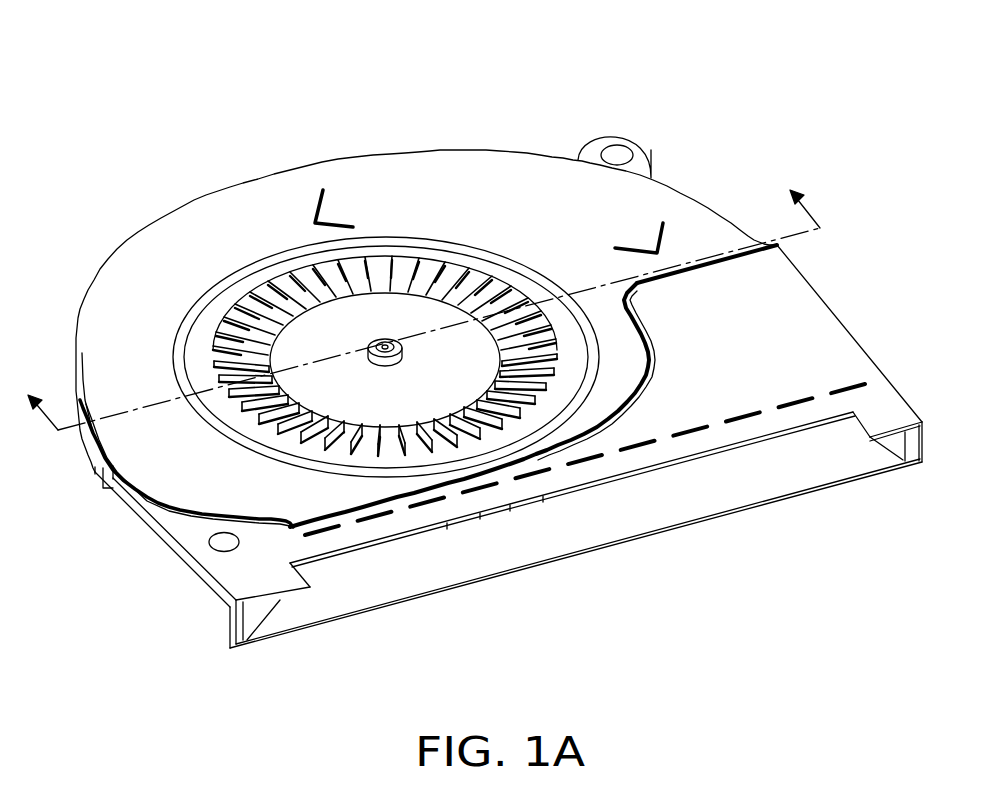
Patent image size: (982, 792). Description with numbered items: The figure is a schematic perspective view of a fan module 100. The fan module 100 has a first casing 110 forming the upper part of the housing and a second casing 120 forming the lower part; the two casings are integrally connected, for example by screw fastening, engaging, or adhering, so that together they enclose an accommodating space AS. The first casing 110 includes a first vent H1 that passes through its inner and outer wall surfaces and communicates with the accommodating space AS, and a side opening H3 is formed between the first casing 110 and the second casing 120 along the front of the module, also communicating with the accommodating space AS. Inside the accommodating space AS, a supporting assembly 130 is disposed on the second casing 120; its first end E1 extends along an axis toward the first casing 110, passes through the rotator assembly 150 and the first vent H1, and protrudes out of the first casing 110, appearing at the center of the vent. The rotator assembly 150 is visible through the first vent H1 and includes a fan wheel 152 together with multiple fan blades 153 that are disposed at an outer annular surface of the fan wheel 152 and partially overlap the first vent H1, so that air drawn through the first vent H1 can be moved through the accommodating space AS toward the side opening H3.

The fan module 100 is at (932, 695).
The first casing 110 is at (793, 310).
The second casing 120 is at (830, 487).
The supporting assembly 130 is at (390, 363).
The first end E1 is at (385, 352).
The rotator assembly 150 is at (307, 98).
The fan wheel 152 is at (317, 283).
The fan blades 153 is at (313, 330).
The first vent H1 is at (491, 265).
The side opening H3 is at (578, 558).
The accommodating space AS is at (686, 492).